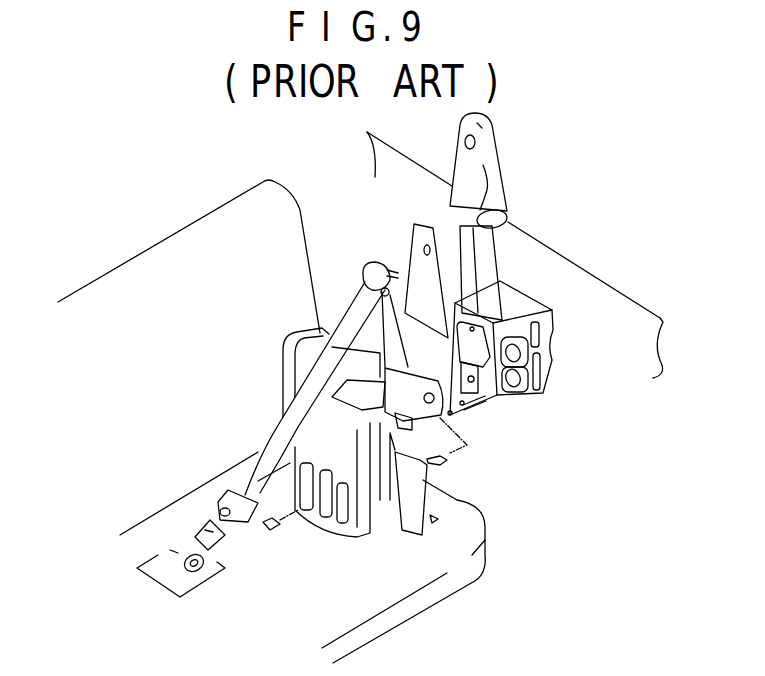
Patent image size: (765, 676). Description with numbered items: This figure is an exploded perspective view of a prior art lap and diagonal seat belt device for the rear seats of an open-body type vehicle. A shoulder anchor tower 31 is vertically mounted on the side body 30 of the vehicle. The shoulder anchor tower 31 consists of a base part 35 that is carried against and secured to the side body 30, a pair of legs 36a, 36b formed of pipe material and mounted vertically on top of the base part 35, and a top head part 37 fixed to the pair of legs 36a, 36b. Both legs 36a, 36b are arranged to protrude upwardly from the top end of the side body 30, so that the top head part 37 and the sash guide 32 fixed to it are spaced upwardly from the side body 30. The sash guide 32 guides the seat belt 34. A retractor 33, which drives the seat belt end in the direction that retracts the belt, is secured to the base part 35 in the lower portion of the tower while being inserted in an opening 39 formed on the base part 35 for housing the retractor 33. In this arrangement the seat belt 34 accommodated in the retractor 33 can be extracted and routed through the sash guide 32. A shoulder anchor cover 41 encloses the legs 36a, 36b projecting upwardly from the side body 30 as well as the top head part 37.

The side body 30 is at (618, 328).
The shoulder anchor tower 31 is at (523, 277).
The sash guide 32 is at (367, 267).
The retractor 33 is at (450, 420).
The seat belt 34 is at (373, 332).
The base part 35 is at (522, 352).
The leg 36a is at (455, 243).
The leg 36b is at (497, 293).
The top head part 37 is at (508, 212).
The opening 39 is at (482, 385).
The shoulder anchor cover 41 is at (487, 150).